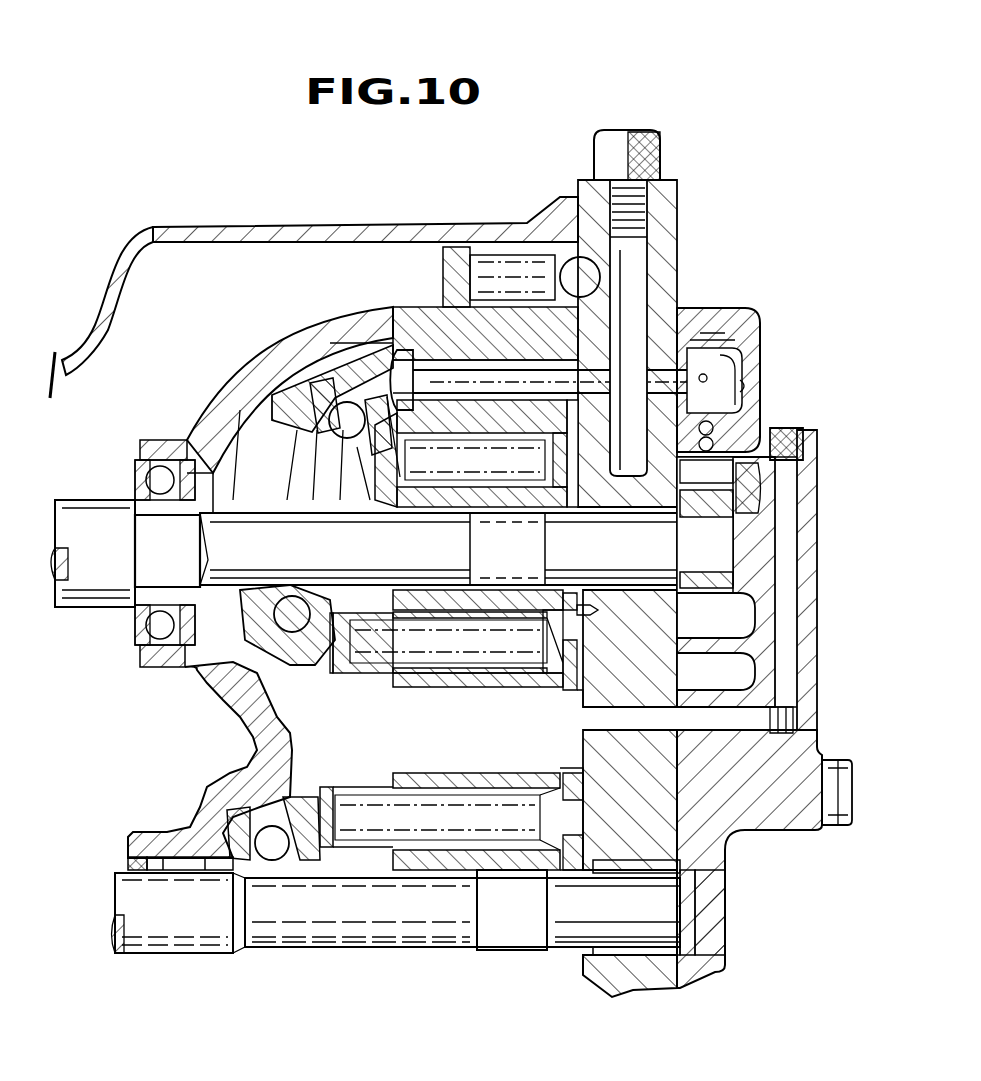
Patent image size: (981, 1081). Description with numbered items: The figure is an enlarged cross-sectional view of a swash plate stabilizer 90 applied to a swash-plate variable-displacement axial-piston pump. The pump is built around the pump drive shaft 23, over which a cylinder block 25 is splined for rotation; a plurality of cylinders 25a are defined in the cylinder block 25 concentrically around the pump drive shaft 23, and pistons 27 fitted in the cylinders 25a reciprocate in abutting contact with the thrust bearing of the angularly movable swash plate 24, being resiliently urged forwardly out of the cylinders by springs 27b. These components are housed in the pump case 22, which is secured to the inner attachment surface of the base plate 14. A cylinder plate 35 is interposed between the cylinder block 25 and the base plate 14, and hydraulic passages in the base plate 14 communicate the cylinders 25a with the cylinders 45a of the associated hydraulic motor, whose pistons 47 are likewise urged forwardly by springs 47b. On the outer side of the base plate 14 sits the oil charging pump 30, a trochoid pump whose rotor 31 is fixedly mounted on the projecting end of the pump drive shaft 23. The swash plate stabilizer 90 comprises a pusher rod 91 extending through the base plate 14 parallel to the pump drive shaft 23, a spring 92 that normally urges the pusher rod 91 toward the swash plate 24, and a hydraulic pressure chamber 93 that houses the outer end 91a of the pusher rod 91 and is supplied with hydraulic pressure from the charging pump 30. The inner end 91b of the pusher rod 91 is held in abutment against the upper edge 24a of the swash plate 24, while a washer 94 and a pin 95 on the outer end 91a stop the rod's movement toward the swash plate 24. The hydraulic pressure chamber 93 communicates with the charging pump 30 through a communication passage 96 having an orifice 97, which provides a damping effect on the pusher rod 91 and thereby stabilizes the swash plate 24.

The base plate 14 is at (677, 212).
The pump case 22 is at (270, 335).
The pump drive shaft 23 is at (60, 505).
The swash plate 24 is at (265, 392).
The upper edge of the swash plate 24a is at (395, 345).
The cylinder block 25 is at (405, 692).
The cylinders 25a is at (507, 791).
The pistons 27 is at (434, 550).
The springs 27b is at (540, 455).
The oil charging pump 30 is at (822, 577).
The rotor 31 is at (742, 598).
The cylinder plate 35 is at (578, 690).
The cylinders 45a is at (525, 775).
The pistons 47 is at (312, 800).
The springs 47b is at (350, 790).
The swash plate stabilizer 90 is at (635, 330).
The pusher rod 91 is at (728, 320).
The outer end of the pusher rod 91a is at (745, 352).
The inner end of the pusher rod 91b is at (398, 352).
The spring 92 is at (447, 358).
The hydraulic pressure chamber 93 is at (752, 386).
The washer 94 is at (735, 345).
The pin 95 is at (760, 340).
The communication passage 96 is at (715, 426).
The orifice 97 is at (800, 450).